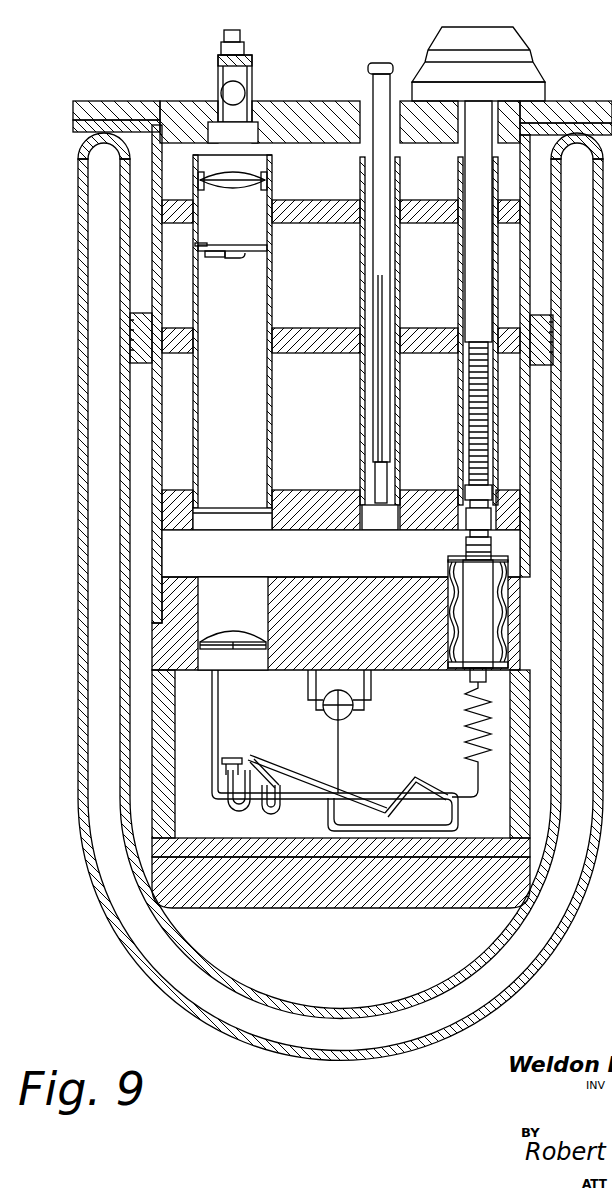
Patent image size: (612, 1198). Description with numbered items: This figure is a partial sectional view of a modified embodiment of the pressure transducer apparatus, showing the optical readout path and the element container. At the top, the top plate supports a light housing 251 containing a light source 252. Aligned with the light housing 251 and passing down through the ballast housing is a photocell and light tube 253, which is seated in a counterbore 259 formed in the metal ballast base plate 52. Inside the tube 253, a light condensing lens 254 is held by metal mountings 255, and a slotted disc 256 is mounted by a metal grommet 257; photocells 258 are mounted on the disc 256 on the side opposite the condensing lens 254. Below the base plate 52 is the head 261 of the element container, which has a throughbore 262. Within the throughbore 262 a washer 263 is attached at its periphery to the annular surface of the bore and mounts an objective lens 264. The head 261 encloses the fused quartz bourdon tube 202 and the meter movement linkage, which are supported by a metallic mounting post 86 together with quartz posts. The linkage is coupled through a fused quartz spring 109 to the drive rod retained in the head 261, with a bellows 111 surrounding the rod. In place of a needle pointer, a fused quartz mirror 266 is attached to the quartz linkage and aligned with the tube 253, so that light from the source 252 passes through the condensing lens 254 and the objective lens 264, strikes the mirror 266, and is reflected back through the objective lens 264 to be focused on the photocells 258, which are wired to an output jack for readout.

The ballast base plate 52 is at (338, 518).
The metallic mounting post 86 is at (220, 722).
The quartz spring 109 is at (465, 722).
The bellows 111 is at (447, 640).
The quartz bourdon tube 202 is at (349, 719).
The light housing 251 is at (237, 38).
The light source 252 is at (240, 92).
The photocell and light tube 253 is at (275, 318).
The light condensing lens 254 is at (243, 177).
The metal mountings 255 is at (270, 193).
The slotted disc 256 is at (210, 248).
The metal grommet 257 is at (265, 236).
The photocells 258 is at (232, 260).
The counterbore 259 is at (275, 490).
The head 261 is at (340, 593).
The throughbore 262 is at (215, 598).
The washer 263 is at (262, 651).
The objective lens 264 is at (235, 632).
The fused quartz mirror 266 is at (232, 758).